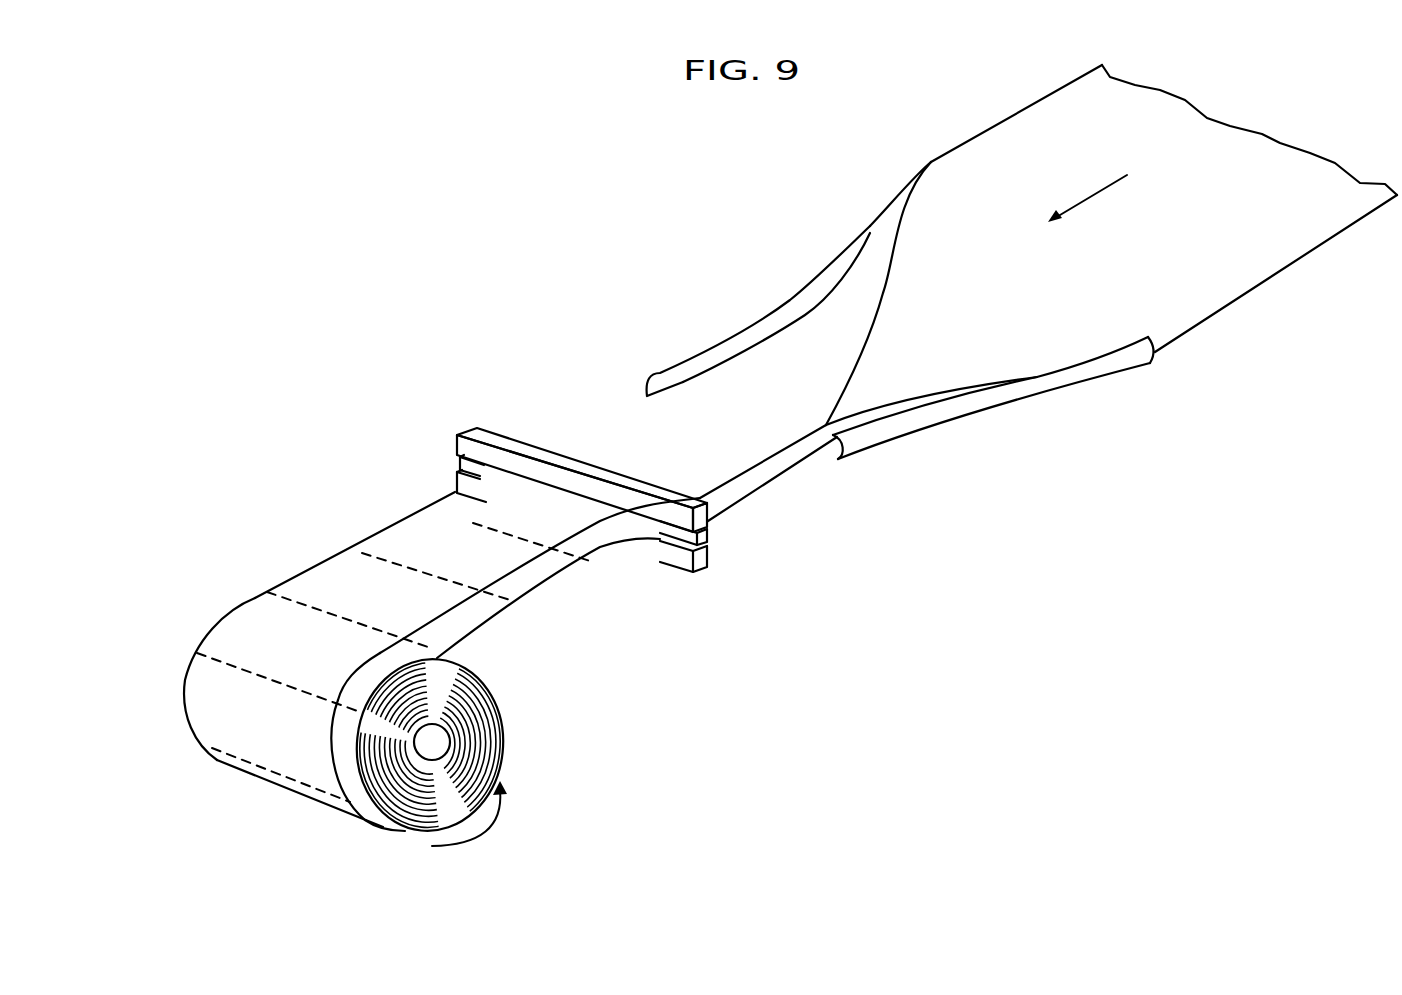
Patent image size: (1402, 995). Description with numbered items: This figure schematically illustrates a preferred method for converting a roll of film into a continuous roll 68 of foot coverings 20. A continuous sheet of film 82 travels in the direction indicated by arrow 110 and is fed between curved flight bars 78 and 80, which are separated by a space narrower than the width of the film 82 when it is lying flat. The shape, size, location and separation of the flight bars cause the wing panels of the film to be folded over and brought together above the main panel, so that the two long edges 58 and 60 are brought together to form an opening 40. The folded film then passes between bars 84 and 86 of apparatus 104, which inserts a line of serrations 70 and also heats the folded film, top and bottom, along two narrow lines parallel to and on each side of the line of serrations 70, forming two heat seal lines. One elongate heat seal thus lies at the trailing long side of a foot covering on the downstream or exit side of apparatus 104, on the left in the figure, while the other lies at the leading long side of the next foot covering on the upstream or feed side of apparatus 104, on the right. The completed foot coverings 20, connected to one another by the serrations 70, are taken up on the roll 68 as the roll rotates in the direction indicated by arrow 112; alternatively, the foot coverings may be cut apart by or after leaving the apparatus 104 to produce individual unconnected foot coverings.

The foot covering 20 is at (230, 650).
The opening 40 is at (752, 460).
The edge 58 is at (988, 128).
The edge 60 is at (1305, 258).
The continuous roll 68 is at (490, 747).
The line of serrations 70 is at (447, 515).
The curved flight bar 78 is at (760, 327).
The curved flight bar 80 is at (1077, 383).
The continuous sheet of film 82 is at (1183, 125).
The bar 84 is at (707, 517).
The bar 86 is at (703, 560).
The apparatus 104 is at (583, 468).
The arrow 110 is at (1089, 200).
The arrow 112 is at (470, 836).